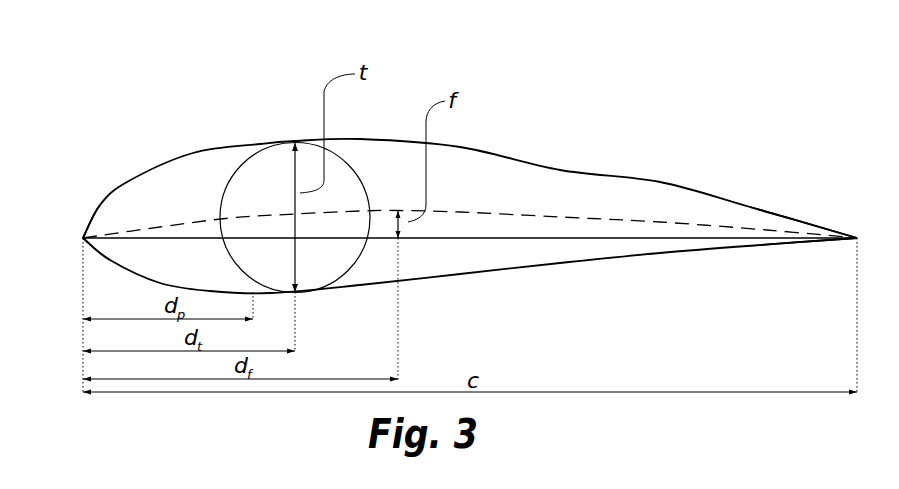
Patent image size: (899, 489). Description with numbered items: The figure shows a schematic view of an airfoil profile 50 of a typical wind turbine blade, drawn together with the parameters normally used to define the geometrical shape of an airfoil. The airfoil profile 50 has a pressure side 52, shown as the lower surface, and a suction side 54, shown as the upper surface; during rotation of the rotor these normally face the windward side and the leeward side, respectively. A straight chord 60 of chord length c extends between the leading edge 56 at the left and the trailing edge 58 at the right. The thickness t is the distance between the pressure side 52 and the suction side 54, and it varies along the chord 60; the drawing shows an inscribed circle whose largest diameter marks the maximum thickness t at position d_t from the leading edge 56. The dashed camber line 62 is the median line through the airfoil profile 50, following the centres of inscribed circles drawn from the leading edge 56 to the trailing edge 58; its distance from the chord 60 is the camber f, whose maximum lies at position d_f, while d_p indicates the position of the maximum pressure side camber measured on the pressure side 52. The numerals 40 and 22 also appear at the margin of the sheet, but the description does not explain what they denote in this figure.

The airfoil profile 50 is at (453, 165).
The pressure side 52 is at (623, 263).
The suction side 54 is at (566, 162).
The leading edge 56 is at (83, 238).
The trailing edge 58 is at (857, 237).
The chord 60 is at (660, 238).
The camber line 62 is at (460, 212).
The blade 40 is at (14, 427).
The rotor 22 is at (155, 488).